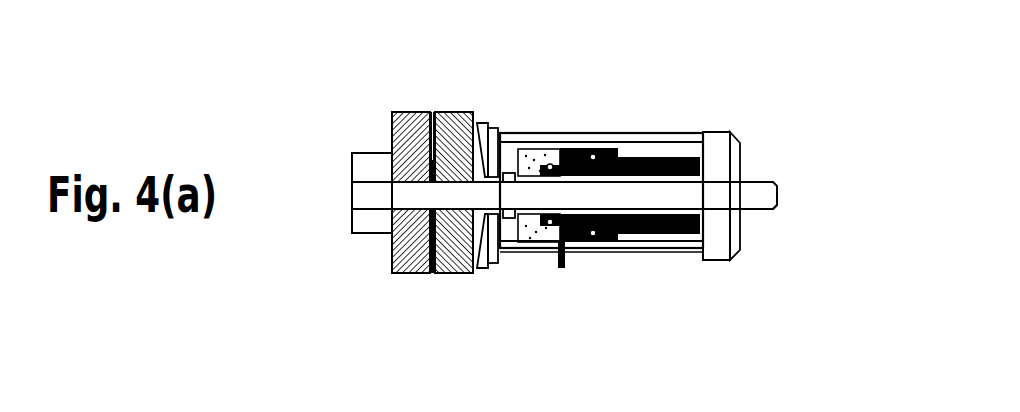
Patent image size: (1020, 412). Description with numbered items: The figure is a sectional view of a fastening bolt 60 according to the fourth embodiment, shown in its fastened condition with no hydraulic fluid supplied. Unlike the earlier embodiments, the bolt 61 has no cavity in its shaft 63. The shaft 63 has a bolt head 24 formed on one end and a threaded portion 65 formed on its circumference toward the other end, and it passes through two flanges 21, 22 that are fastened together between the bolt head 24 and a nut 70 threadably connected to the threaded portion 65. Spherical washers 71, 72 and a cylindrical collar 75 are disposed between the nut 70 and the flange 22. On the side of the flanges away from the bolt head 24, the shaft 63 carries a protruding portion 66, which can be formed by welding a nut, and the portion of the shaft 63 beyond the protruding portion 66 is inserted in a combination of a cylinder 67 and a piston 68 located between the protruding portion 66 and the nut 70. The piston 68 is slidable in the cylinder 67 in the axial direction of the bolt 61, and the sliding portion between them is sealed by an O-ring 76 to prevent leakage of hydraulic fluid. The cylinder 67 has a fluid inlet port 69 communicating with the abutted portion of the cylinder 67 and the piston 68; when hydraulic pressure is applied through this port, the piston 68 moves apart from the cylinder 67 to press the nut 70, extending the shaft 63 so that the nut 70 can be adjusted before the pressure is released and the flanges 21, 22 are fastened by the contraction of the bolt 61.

The fastening bolt 60 is at (800, 45).
The bolt 61 is at (893, 165).
The shaft 63 is at (430, 194).
The threaded portion 65 is at (745, 211).
The bolt head 24 is at (348, 181).
The flange 21 is at (420, 108).
The flange 22 is at (455, 108).
The spherical washer 71 is at (486, 116).
The spherical washer 72 is at (493, 124).
The protruding portion 66 is at (510, 224).
The cylinder 67 is at (540, 251).
The collar 75 is at (672, 117).
The piston 68 is at (760, 312).
The O-ring 76 is at (597, 239).
The fluid inlet port 69 is at (559, 272).
The nut 70 is at (867, 116).